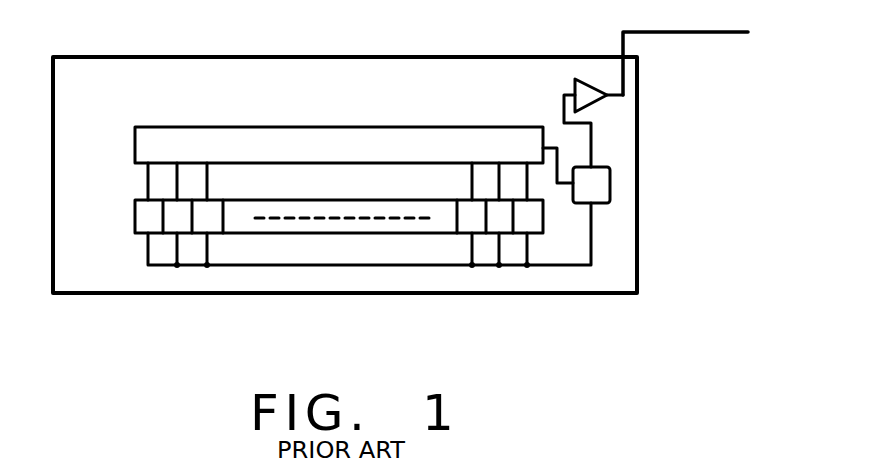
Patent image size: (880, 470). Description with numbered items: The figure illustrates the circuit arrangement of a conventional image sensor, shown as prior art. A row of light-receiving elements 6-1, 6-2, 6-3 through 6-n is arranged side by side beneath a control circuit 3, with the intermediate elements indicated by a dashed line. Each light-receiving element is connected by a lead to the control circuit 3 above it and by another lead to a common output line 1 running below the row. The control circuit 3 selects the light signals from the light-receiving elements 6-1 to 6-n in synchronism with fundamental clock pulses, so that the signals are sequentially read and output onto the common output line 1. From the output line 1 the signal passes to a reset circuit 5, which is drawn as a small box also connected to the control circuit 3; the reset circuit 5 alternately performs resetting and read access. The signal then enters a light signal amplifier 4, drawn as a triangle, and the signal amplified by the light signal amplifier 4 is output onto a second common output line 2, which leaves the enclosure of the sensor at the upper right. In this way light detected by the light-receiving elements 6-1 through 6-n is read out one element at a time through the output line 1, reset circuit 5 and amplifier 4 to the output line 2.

The common output line 1 is at (383, 266).
The common output line 2 is at (693, 32).
The control circuit 3 is at (283, 128).
The light signal amplifier 4 is at (578, 86).
The reset circuit 5 is at (600, 181).
The light-receiving element 6-1 is at (145, 226).
The light-receiving element 6-2 is at (175, 226).
The light-receiving element 6-3 is at (212, 226).
The light-receiving element 6-n is at (533, 226).